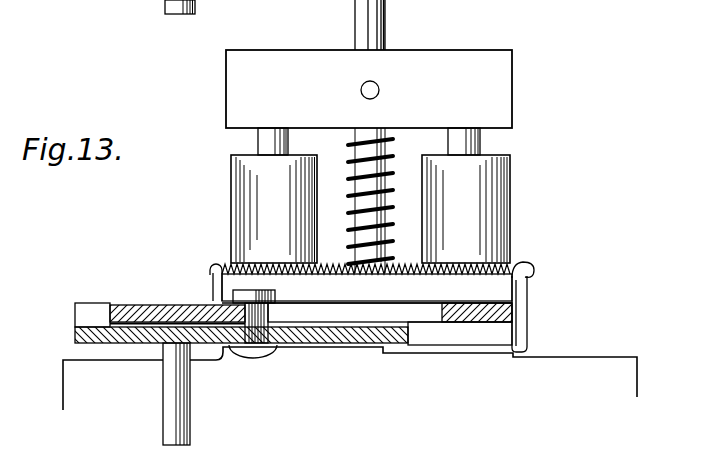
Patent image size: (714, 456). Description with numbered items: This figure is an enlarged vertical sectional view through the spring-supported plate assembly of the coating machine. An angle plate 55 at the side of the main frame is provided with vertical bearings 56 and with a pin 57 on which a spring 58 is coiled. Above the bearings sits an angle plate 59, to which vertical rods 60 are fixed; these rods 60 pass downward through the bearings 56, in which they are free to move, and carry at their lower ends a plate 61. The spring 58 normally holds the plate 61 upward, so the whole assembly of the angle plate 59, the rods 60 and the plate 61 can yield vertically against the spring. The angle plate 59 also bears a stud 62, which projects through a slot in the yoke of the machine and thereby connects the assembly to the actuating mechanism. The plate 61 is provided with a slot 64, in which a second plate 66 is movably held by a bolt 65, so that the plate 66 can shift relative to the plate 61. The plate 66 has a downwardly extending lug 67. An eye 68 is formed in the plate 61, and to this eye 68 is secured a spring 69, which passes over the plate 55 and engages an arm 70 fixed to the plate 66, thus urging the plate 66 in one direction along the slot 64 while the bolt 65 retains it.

The angle plate 55 is at (367, 288).
The vertical bearings 56 is at (250, 215).
The pin 57 is at (368, 22).
The spring 58 is at (350, 205).
The angle plate 59 is at (452, 45).
The vertical rods 60 is at (268, 143).
The plate 61 is at (165, 305).
The stud 62 is at (391, 81).
The slot 64 is at (378, 312).
The bolt 65 is at (233, 293).
The plate 66 is at (98, 327).
The lug 67 is at (197, 4).
The eye 68 is at (214, 262).
The spring 69 is at (462, 268).
The arm 70 is at (528, 312).